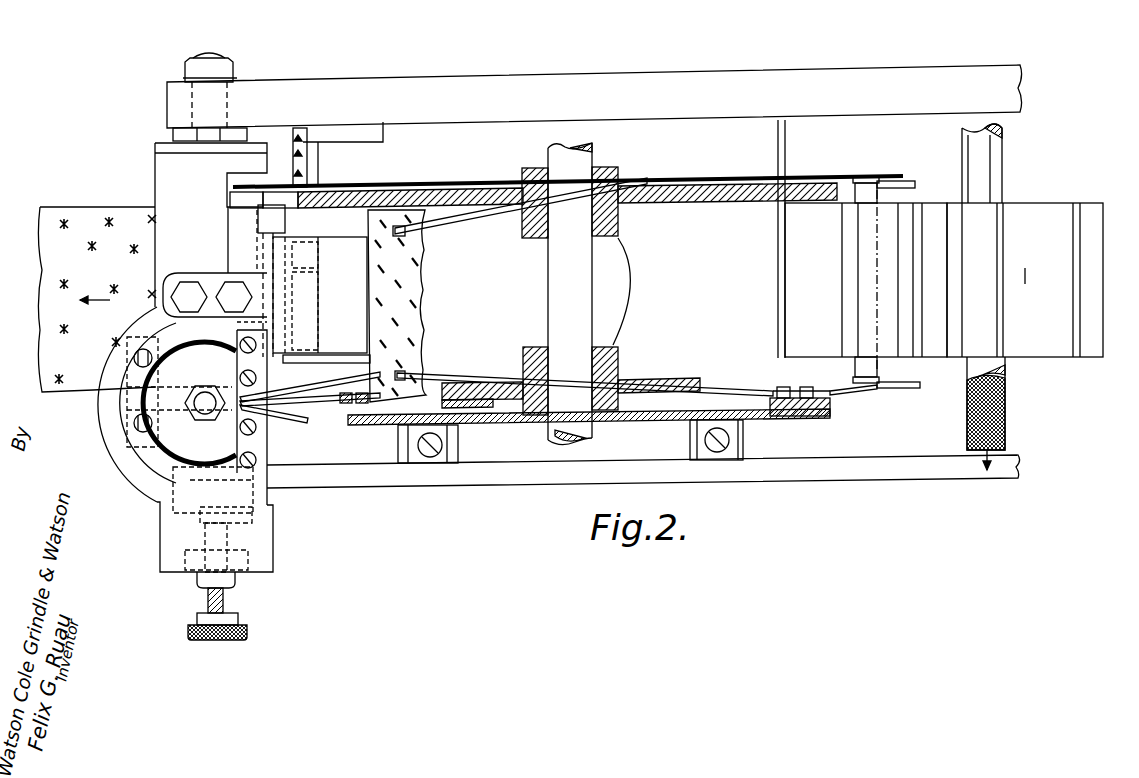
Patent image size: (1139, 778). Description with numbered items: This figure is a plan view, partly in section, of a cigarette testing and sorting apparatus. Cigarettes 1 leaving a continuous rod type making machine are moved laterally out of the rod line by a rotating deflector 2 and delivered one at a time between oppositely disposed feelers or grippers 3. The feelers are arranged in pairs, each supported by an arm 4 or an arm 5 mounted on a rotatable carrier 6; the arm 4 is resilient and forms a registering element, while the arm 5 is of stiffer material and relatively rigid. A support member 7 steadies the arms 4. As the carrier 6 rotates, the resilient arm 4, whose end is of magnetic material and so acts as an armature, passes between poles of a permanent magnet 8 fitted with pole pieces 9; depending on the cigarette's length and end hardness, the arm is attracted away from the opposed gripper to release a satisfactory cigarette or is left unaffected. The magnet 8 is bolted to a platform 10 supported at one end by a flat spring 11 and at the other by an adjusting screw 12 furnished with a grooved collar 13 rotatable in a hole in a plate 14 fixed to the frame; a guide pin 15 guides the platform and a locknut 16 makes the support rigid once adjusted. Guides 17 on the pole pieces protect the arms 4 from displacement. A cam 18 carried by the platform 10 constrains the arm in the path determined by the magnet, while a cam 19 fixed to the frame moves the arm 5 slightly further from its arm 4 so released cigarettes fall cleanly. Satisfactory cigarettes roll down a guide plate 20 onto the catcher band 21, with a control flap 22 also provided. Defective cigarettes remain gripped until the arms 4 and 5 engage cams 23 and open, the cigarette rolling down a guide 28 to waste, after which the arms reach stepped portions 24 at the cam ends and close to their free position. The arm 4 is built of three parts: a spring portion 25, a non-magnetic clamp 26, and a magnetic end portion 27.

The cigarettes 1 is at (873, 257).
The rotating deflector 2 is at (1040, 213).
The feelers or grippers 3 is at (856, 200).
The arm 4 is at (772, 400).
The arm 5 is at (766, 178).
The rotatable carrier 6 is at (578, 294).
The support member 7 is at (660, 420).
The permanent magnet 8 is at (127, 405).
The pole pieces 9 is at (270, 452).
The platform 10 is at (126, 466).
The flat spring 11 is at (155, 154).
The adjusting screw 12 is at (240, 625).
The grooved collar 13 is at (255, 530).
The plate 14 is at (260, 512).
The guide pin 15 is at (255, 558).
The locknut 16 is at (200, 586).
The guides 17 is at (305, 378).
The cam 18 is at (350, 395).
The cam 19 is at (288, 186).
The guide plate 20 is at (320, 264).
The catcher band 21 is at (50, 342).
The control flap 22 is at (266, 222).
The cams 23 is at (437, 228).
The stepped portions 24 is at (912, 180).
The spring portion 25 is at (705, 392).
The clamp 26 is at (832, 398).
The end portion 27 is at (900, 392).
The guide 28 is at (425, 312).